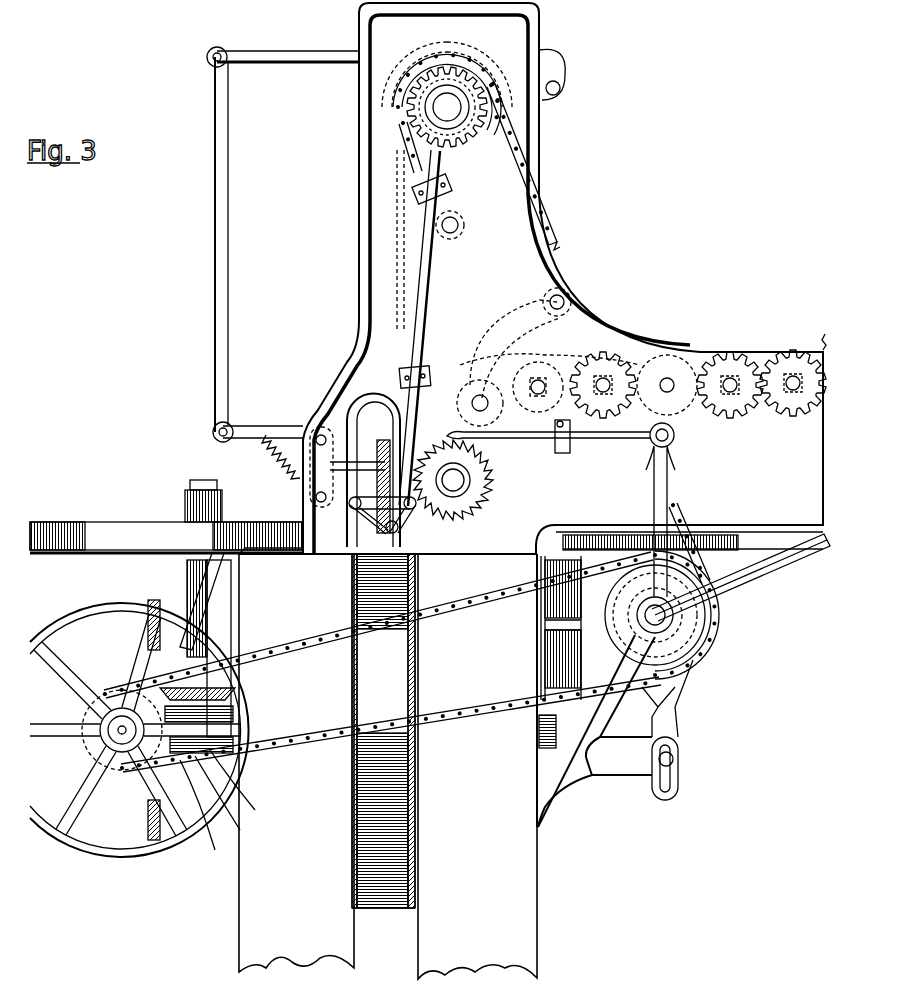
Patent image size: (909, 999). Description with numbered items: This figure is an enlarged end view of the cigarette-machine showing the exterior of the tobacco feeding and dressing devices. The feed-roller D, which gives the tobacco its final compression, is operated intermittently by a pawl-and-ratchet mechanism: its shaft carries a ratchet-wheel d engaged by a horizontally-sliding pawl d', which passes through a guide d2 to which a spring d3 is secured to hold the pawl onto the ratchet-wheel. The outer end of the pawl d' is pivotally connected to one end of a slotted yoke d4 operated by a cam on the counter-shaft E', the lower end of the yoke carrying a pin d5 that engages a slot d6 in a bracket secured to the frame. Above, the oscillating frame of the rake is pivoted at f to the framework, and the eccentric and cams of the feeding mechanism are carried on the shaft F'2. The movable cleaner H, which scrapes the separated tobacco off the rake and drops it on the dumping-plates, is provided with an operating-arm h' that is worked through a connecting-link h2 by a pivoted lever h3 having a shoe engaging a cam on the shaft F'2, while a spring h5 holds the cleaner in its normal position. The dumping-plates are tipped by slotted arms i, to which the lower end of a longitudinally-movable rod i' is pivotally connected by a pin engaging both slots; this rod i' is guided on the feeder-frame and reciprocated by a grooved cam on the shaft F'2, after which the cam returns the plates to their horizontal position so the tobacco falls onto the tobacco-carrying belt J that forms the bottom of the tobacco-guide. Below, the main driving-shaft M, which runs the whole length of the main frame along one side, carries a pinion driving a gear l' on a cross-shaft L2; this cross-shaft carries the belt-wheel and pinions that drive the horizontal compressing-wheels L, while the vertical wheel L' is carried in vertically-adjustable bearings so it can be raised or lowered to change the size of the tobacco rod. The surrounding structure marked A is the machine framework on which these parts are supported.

The pivoted lever h3 is at (297, 55).
The connecting-link h2 is at (200, 244).
The operating-arm h' is at (258, 423).
The spring h5 is at (268, 457).
The vertical wheel L' is at (313, 481).
The movable cleaner H is at (373, 425).
The arm i is at (368, 519).
The longitudinally-movable rod i' is at (427, 328).
The shaft F'2 is at (498, 152).
The pivot f is at (457, 220).
The horizontally-sliding pawl d' is at (698, 413).
The guide d2 is at (563, 453).
The spring d3 is at (541, 448).
The slotted yoke d4 is at (668, 478).
The ratchet-wheel d is at (462, 483).
The feed-roller D is at (455, 486).
The horizontal compressing-wheel L is at (426, 544).
The counter-shaft E' is at (467, 665).
The pin d5 is at (670, 757).
The slot d6 is at (678, 784).
The tobacco-carrying belt J is at (383, 731).
The frame A is at (465, 814).
The main driving-shaft M is at (122, 737).
The gear l' is at (134, 815).
The cross-shaft L2 is at (200, 780).